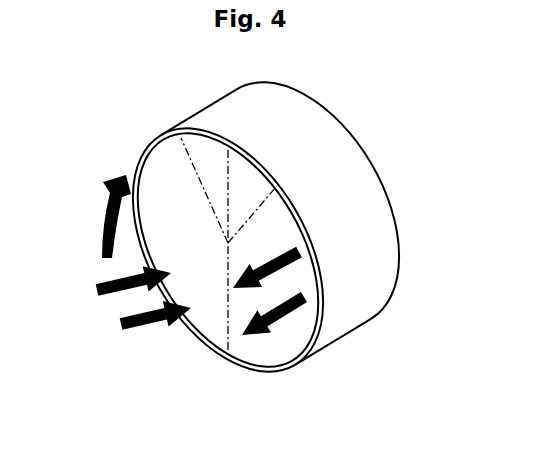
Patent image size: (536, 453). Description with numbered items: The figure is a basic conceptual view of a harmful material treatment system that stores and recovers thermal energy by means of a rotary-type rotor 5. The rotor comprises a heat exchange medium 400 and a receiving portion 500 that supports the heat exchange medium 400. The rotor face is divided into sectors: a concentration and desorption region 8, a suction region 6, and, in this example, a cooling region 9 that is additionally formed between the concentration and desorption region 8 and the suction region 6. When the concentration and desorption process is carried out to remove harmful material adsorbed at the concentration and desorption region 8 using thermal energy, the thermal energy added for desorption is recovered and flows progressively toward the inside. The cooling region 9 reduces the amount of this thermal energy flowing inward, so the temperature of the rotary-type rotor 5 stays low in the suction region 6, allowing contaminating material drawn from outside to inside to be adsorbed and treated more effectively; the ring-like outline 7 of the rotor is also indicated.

The rotary-type rotor 5 is at (171, 100).
The suction region 6 is at (268, 347).
The ring 7 is at (213, 330).
The concentration and desorption region 8 is at (210, 151).
The cooling region 9 is at (248, 177).
The heat exchange medium 400 is at (162, 225).
The receiving portion 500 is at (362, 227).